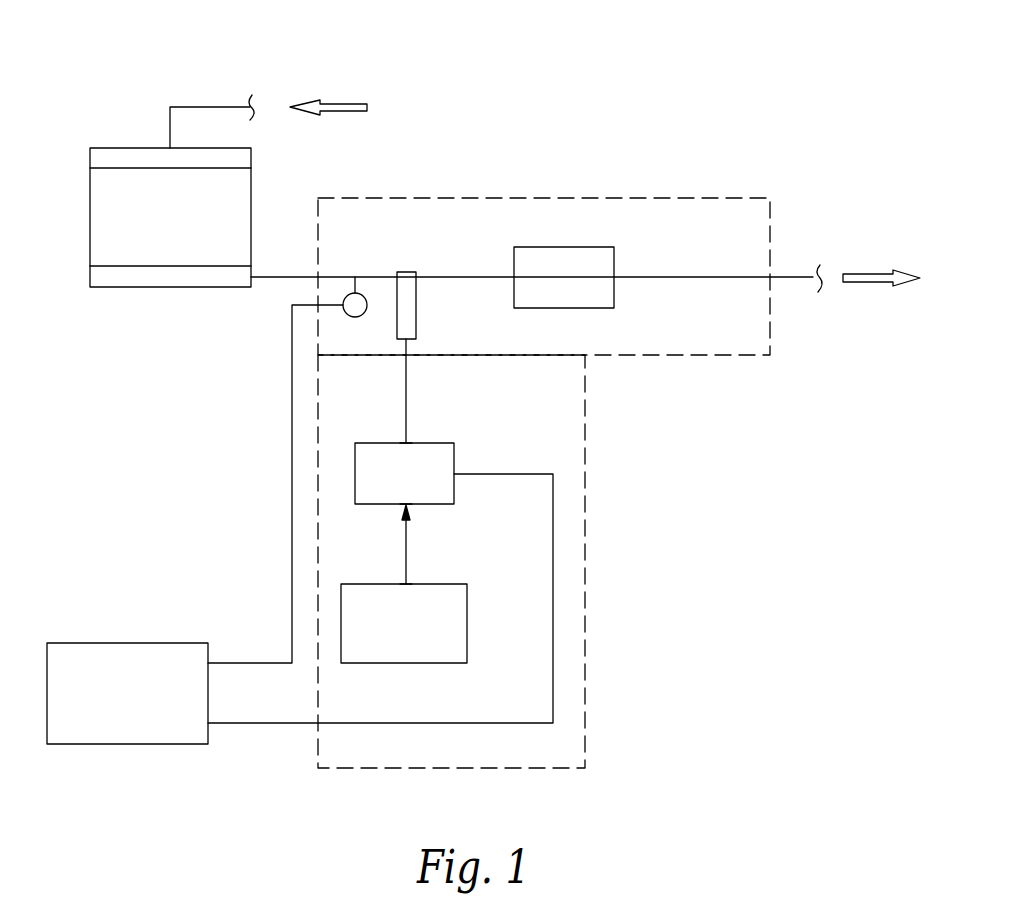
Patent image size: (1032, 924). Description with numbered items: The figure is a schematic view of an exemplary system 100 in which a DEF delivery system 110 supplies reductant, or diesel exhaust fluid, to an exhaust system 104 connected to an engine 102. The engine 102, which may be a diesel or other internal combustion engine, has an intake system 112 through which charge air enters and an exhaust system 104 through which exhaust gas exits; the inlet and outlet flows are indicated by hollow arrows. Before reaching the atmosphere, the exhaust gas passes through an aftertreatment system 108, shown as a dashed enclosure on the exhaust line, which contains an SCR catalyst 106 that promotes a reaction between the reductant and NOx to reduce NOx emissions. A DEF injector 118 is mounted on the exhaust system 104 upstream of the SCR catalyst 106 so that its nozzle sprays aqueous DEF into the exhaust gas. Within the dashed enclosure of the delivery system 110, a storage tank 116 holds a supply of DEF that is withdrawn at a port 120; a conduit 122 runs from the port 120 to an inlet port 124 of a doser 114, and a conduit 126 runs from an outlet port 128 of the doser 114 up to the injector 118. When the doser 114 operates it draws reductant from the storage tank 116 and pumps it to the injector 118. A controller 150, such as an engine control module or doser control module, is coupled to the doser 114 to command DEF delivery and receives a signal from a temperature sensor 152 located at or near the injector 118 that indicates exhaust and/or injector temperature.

The system 100 is at (410, 66).
The engine 102 is at (253, 191).
The exhaust system 104 is at (274, 294).
The SCR catalyst 106 is at (563, 268).
The aftertreatment system 108 is at (473, 186).
The DEF delivery system 110 is at (596, 522).
The intake system 112 is at (208, 99).
The doser 114 is at (447, 442).
The storage tank 116 is at (463, 584).
The DEF injector 118 is at (417, 313).
The port 120 is at (407, 584).
The conduit 122 is at (406, 553).
The inlet port 124 is at (406, 504).
The conduit 126 is at (406, 393).
The outlet port 128 is at (406, 441).
The controller 150 is at (150, 698).
The temperature sensor 152 is at (366, 298).